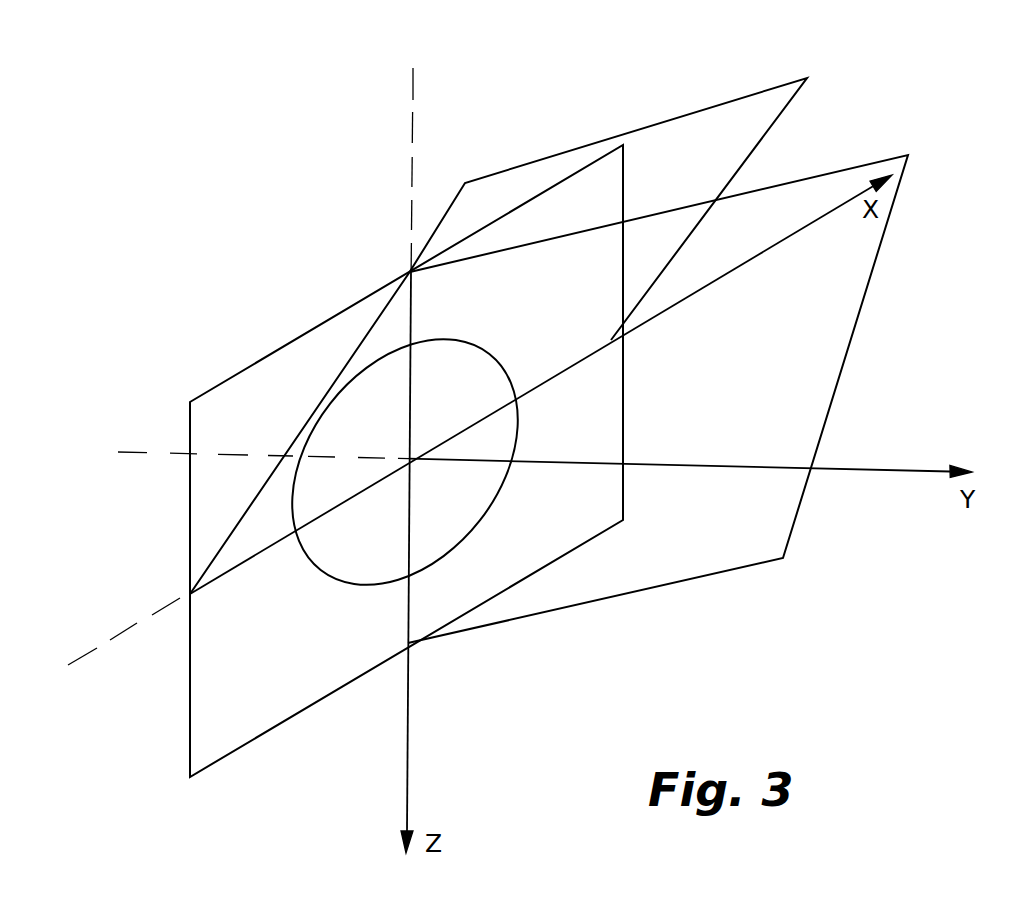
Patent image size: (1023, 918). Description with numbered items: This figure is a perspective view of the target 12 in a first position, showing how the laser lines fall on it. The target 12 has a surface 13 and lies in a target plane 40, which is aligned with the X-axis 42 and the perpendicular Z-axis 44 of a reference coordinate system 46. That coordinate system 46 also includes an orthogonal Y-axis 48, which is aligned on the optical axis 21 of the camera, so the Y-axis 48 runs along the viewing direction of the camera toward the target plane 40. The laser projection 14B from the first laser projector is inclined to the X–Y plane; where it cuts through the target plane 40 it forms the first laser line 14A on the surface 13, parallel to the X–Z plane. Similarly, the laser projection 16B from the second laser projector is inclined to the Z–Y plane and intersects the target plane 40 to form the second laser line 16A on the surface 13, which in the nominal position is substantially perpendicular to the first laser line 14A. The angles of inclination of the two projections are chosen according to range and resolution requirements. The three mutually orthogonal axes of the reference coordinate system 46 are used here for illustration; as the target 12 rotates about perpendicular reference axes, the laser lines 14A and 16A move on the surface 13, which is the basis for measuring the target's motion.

The target 12 is at (405, 490).
The surface 13 is at (371, 553).
The first laser line 14A is at (406, 461).
The laser projection 14B is at (498, 304).
The second laser line 16A is at (350, 638).
The laser projection 16B is at (711, 399).
The optical axis 21 is at (263, 407).
The target plane 40 is at (668, 385).
The X-axis 42 is at (480, 373).
The Z-axis 44 is at (450, 460).
The reference coordinate system 46 is at (585, 61).
The Y-axis 48 is at (690, 431).